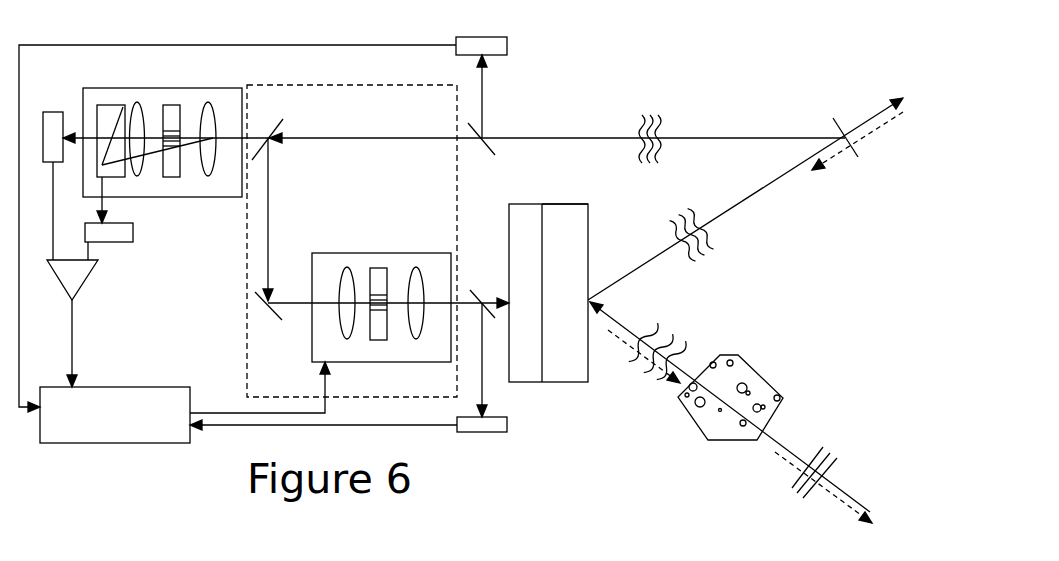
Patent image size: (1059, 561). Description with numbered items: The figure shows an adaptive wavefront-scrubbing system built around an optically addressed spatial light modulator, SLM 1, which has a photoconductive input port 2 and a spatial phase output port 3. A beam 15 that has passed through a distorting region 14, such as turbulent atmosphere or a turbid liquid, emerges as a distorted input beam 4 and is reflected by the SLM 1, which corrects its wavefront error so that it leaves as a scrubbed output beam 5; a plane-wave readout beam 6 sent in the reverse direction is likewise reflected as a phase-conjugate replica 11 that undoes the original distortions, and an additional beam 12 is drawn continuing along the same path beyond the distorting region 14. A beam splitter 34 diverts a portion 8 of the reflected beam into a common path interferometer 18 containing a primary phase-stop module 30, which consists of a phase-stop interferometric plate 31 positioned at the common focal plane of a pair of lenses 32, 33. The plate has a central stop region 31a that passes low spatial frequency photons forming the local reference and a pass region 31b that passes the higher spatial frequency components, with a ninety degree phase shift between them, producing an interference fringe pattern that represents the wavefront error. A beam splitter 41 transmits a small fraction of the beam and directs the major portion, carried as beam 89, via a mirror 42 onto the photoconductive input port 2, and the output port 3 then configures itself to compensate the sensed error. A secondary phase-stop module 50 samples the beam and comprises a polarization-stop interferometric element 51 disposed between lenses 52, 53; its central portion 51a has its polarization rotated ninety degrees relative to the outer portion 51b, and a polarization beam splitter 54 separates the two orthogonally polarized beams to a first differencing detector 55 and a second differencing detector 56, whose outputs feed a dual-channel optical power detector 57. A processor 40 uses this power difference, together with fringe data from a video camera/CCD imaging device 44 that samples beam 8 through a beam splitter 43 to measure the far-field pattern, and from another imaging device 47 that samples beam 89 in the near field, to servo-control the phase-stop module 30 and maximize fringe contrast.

The spatial light modulator 1 is at (568, 397).
The photoconductive input port 2 is at (522, 215).
The spatial phase output port 3 is at (572, 227).
The distorted input beam 4 is at (623, 318).
The scrubbed output beam 5 is at (700, 223).
The readout beam 6 is at (865, 140).
The external reference beam portion 8 is at (640, 117).
The phase-conjugate replica 11 is at (618, 340).
The transmitted beam 12 is at (845, 507).
The distorting region 14 is at (757, 377).
The beam 15 is at (850, 492).
The common path interferometer 18 is at (355, 75).
The phase-stop module 30 is at (445, 356).
The phase-stop interferometric plate 31 is at (373, 356).
The stop region 31a is at (388, 308).
The pass region 31b is at (378, 268).
The lens 32 is at (345, 262).
The lens 33 is at (422, 264).
The beam splitter 34 is at (837, 123).
The processor 40 is at (115, 415).
The beam splitter 41 is at (270, 128).
The mirror 42 is at (260, 315).
The beam splitter 43 is at (483, 145).
The video camera/CCD imaging device 44 is at (486, 45).
The camera/CCD imaging device 47 is at (485, 432).
The secondary phase-stop module 50 is at (236, 188).
The polarization-stop interferometric element 51 is at (170, 193).
The central portion 51a is at (180, 143).
The outer portion 51b is at (172, 105).
The lens 52 is at (137, 104).
The lens 53 is at (207, 108).
The polarization beam splitter 54 is at (102, 105).
The first differencing detector 55 is at (53, 112).
The second differencing detector 56 is at (110, 235).
The dual-channel optical power detector 57 is at (77, 277).
The beam 89 is at (462, 302).